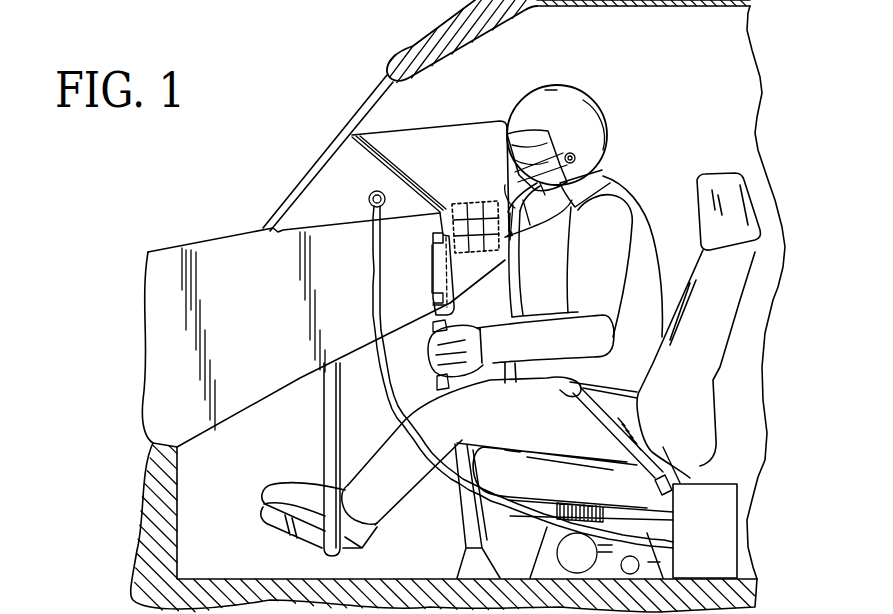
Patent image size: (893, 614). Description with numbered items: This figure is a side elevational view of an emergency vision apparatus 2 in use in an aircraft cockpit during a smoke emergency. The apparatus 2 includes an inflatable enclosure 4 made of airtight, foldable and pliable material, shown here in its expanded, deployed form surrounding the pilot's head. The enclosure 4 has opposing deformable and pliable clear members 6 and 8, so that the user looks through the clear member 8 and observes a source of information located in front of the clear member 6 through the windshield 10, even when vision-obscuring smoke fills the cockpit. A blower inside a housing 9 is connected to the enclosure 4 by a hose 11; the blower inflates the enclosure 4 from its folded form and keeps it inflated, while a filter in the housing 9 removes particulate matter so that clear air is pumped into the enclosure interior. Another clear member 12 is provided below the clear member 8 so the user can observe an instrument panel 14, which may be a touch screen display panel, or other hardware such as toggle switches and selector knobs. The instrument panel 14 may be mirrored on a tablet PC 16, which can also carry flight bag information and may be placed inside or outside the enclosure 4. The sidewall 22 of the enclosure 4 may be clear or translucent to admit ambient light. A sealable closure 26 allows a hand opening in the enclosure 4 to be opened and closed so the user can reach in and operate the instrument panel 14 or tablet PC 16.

The emergency vision apparatus 2 is at (446, 114).
The inflatable enclosure 4 is at (357, 175).
The clear member 6 is at (287, 194).
The clear member 8 is at (543, 134).
The housing 9 is at (717, 525).
The windshield 10 is at (310, 165).
The hose 11 is at (448, 479).
The clear member 12 is at (428, 243).
The instrument panel 14 is at (430, 277).
The tablet PC 16 is at (433, 295).
The sidewall 22 is at (461, 174).
The sealable closure 26 is at (586, 157).